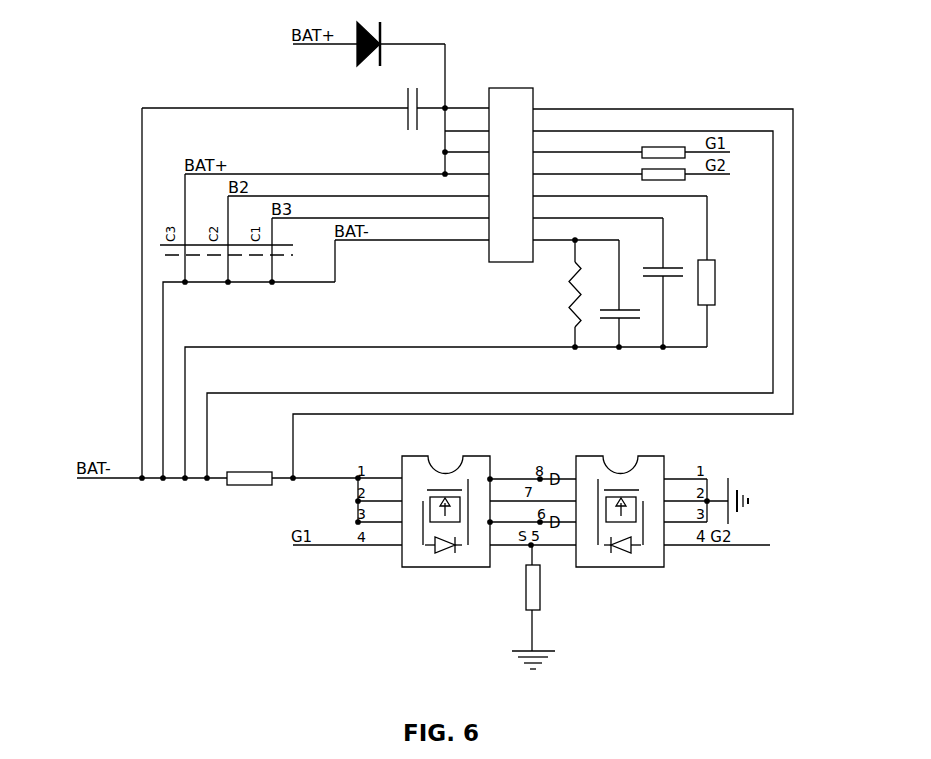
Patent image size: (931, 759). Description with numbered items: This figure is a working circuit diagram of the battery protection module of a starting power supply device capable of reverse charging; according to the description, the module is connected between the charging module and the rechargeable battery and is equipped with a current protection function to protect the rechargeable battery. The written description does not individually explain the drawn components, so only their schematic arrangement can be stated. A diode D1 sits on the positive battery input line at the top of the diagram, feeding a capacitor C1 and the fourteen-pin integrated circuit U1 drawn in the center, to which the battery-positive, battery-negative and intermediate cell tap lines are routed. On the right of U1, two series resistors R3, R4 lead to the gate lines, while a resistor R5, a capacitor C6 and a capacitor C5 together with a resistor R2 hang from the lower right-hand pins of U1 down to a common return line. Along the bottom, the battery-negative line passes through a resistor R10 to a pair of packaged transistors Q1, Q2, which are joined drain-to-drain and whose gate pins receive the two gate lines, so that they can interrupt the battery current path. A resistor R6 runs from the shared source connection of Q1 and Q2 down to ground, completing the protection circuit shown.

The diode D1 is at (369, 33).
The capacitor C1 is at (315, 109).
The SO14 integrated circuit U1 is at (382, 180).
The 33R resistor R3 is at (651, 157).
The 33R resistor R4 is at (651, 179).
The resistor R5 is at (636, 271).
The capacitor C6 is at (610, 282).
The capacitor C5 is at (586, 293).
The resistor R2 is at (561, 293).
The resistor R10 is at (239, 496).
The MOSFET transistor Q1 is at (446, 502).
The MOSFET transistor Q2 is at (620, 502).
The resistor R6 is at (537, 607).